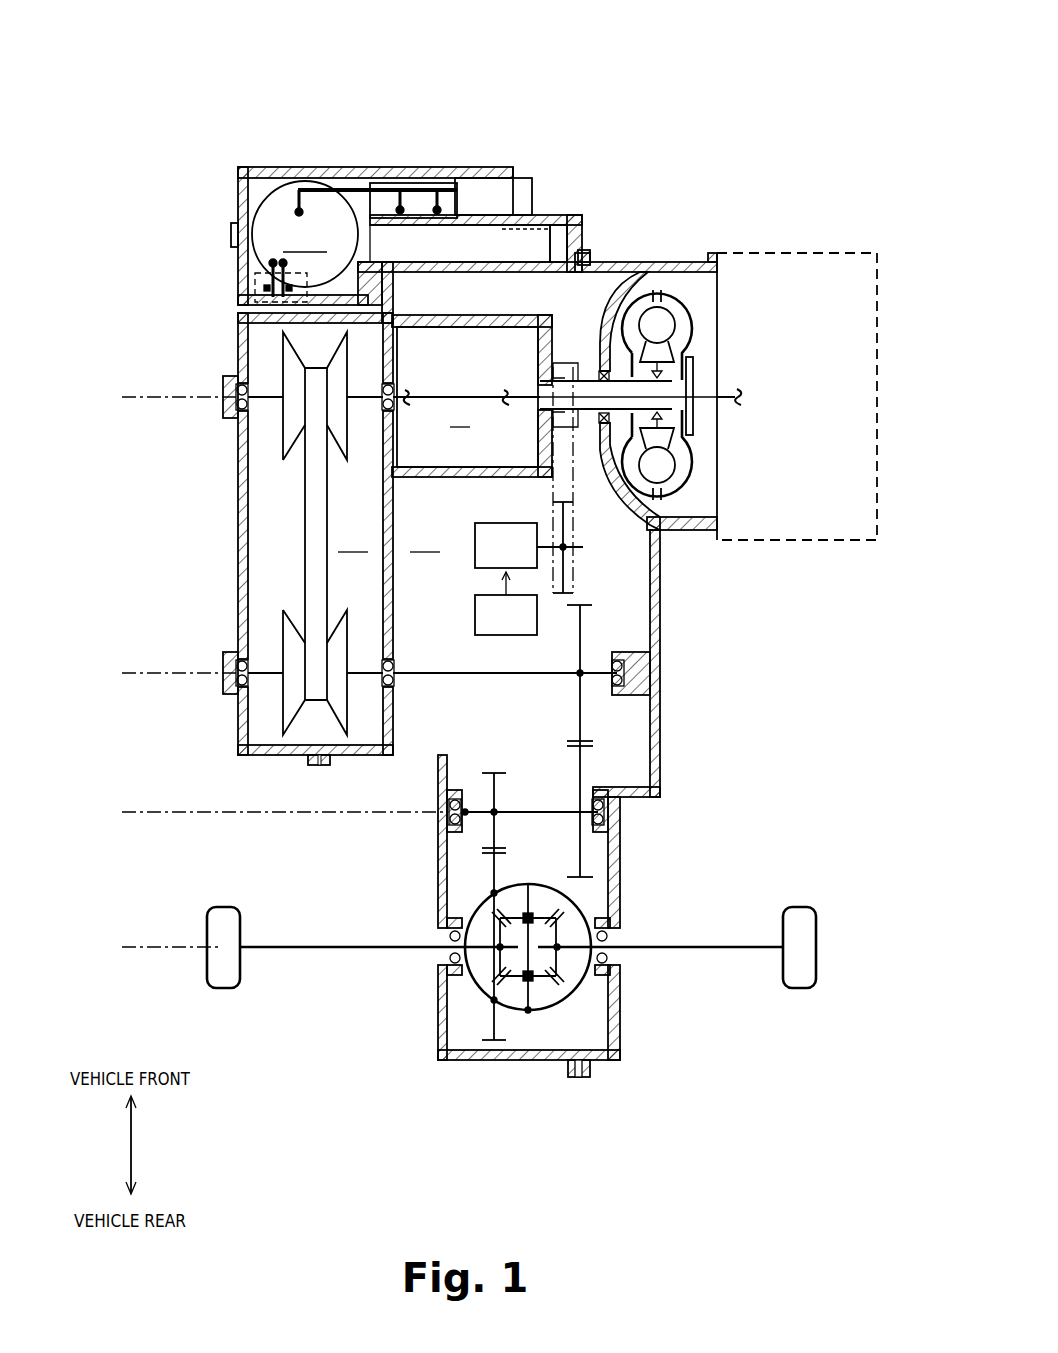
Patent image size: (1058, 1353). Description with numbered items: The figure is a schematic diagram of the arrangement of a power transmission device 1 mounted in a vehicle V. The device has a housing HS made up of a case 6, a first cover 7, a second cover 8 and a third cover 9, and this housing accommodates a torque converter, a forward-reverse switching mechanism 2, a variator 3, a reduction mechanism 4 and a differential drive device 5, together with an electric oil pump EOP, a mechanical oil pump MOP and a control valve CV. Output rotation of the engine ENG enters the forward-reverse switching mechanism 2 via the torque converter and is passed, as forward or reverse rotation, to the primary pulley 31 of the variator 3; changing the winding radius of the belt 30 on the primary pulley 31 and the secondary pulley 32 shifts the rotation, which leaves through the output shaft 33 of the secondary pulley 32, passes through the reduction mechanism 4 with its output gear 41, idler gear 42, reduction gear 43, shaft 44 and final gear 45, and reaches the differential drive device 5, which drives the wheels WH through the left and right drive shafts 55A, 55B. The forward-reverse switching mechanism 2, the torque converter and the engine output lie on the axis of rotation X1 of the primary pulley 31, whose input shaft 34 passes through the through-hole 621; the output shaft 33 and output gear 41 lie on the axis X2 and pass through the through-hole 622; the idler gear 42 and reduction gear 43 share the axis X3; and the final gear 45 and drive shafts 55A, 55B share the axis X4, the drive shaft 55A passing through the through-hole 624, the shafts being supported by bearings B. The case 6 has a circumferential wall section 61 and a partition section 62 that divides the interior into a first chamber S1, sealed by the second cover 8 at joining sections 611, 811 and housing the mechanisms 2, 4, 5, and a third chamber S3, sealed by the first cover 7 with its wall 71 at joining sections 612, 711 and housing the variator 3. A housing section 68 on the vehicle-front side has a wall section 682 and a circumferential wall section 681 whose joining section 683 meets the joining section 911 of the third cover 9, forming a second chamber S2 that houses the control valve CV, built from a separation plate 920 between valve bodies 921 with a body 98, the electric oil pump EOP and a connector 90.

The power transmission device 1 is at (762, 135).
The forward-reverse switching mechanism 2 is at (472, 396).
The variator 3 is at (140, 425).
The belt 30 is at (305, 543).
The primary pulley 31 is at (290, 430).
The secondary pulley 32 is at (290, 632).
The output shaft 33 is at (430, 670).
The input shaft 34 is at (368, 395).
The reduction mechanism 4 is at (640, 812).
The output gear 41 is at (582, 717).
The idler gear 42 is at (582, 763).
The reduction gear 43 is at (498, 831).
The intermediate shaft 44 is at (527, 810).
The final gear 45 is at (497, 872).
The differential drive device 5 is at (463, 905).
The drive shaft 55A is at (313, 945).
The drive shaft 55B is at (733, 945).
The case 6 is at (512, 260).
The circumferential wall section 61 is at (472, 1060).
The joining section 611 is at (572, 1078).
The joining section 612 is at (327, 760).
The partition section 62 is at (388, 590).
The through-hole 621 is at (396, 408).
The through-hole 622 is at (396, 690).
The through-hole 624 is at (440, 962).
The housing section 68 is at (236, 252).
The circumferential wall section 681 is at (578, 250).
The wall section 682 is at (449, 265).
The joining section 683 is at (232, 237).
The first cover 7 is at (317, 312).
The wall portion 71 is at (270, 322).
The joining section 711 is at (308, 768).
The second cover 8 is at (638, 262).
The joining section 811 is at (590, 1072).
The third cover 9 is at (443, 165).
The connector 90 is at (233, 283).
The joining section 911 is at (232, 226).
The separation plate 920 is at (483, 225).
The valve body 921 is at (407, 243).
The valve body 98 is at (522, 193).
The housing HS is at (722, 60).
The control valve CV is at (418, 183).
The first chamber S1 is at (425, 534).
The second chamber S2 is at (262, 190).
The third chamber S3 is at (353, 534).
The electric oil pump EOP is at (305, 234).
The mechanical oil pump MOP is at (529, 501).
The engine ENG is at (797, 396).
The drive wheel WH is at (222, 965).
The vehicle V is at (776, 1137).
The bearing B is at (236, 408).
The axis of rotation X1 is at (159, 396).
The axis of rotation X2 is at (159, 672).
The axis of rotation X3 is at (265, 811).
The axis of rotation X4 is at (152, 946).